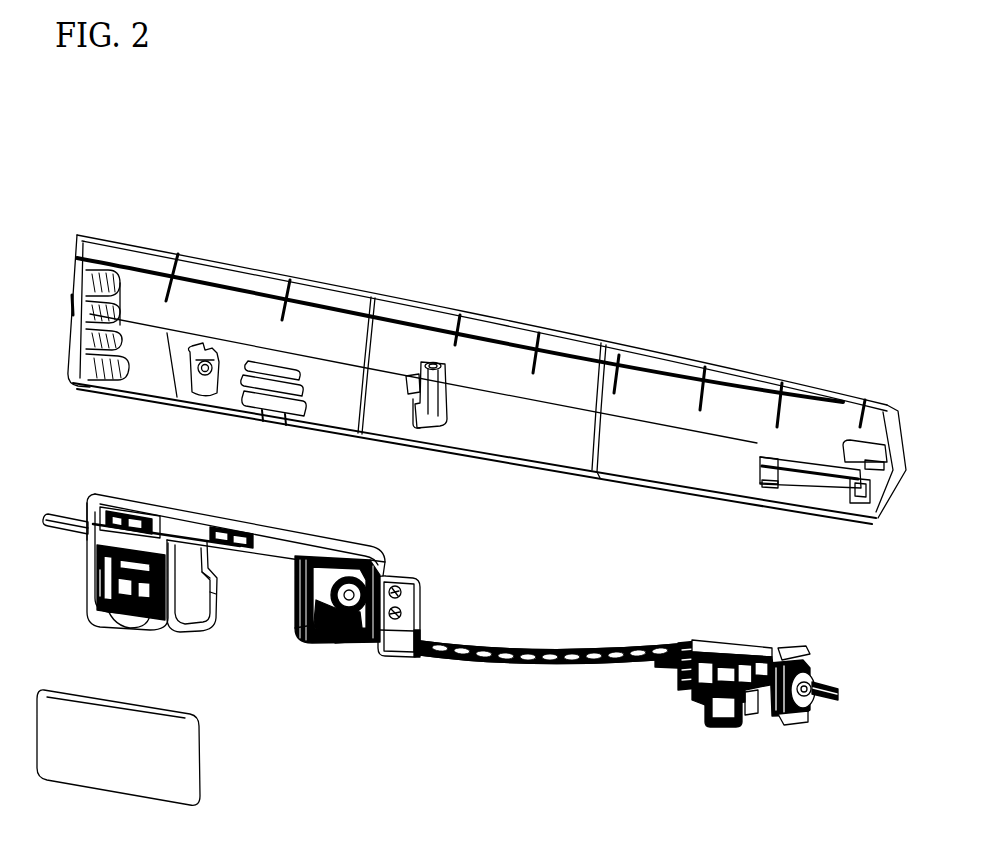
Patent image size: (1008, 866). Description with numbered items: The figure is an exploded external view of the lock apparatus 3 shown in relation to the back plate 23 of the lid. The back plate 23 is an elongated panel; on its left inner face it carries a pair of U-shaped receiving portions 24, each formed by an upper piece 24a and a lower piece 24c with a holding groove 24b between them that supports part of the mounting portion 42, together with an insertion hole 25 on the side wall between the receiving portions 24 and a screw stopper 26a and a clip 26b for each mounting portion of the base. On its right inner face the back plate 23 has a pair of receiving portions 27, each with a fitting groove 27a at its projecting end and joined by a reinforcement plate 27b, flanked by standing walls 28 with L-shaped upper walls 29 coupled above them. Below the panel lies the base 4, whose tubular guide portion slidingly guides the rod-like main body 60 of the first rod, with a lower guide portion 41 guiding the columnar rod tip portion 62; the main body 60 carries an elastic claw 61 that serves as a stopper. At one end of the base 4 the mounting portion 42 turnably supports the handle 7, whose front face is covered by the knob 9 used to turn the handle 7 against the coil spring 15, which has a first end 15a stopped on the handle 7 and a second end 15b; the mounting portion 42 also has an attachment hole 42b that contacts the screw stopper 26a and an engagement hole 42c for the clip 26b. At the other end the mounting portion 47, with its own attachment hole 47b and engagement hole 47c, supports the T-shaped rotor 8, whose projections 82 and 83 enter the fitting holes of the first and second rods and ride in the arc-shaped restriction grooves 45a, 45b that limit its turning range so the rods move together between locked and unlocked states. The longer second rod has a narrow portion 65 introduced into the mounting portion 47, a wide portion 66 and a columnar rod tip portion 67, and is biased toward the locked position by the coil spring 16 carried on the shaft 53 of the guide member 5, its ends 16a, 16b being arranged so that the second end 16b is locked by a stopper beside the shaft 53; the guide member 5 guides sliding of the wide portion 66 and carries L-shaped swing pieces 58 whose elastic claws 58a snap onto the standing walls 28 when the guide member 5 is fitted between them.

The lock apparatus 3 is at (498, 597).
The base 4 is at (353, 552).
The guide member 5 is at (749, 685).
The handle 7 is at (92, 585).
The rotor 8 is at (331, 600).
The knob 9 is at (100, 780).
The coil spring 15 is at (114, 610).
The first end 15a is at (165, 612).
The switch body front portion 15b is at (105, 593).
The coil spring 16 is at (728, 689).
The connector housing upper portion 16a is at (737, 685).
The second end 16b is at (755, 708).
The back plate 23 is at (550, 335).
The receiving portions 24 is at (149, 279).
The upper piece 24a is at (112, 282).
The holding groove 24b is at (120, 310).
The lower piece 24c is at (122, 329).
The insertion hole 25 is at (70, 305).
The screw stopper 26a is at (215, 378).
The clip 26b is at (205, 345).
The receiving portions 27 is at (765, 435).
The fitting groove 27a is at (760, 463).
The reinforcement plate 27b is at (780, 460).
The standing walls 28 is at (857, 450).
The upper walls 29 is at (880, 457).
The lower guide portion 41 is at (97, 540).
The mounting portion 42 is at (218, 602).
The attachment hole 42b is at (208, 596).
The engagement hole 42c is at (208, 577).
The restriction groove 45a is at (383, 558).
The restriction groove 45b is at (311, 640).
The mounting portion 47 is at (426, 604).
The attachment hole 47b is at (397, 587).
The engagement hole 47c is at (401, 614).
The shaft 53 is at (718, 715).
The swing pieces 58 is at (822, 685).
The elastic claw 58a is at (801, 648).
The main body 60 is at (227, 528).
The elastic claw 61 is at (100, 502).
The rod tip portion 62 is at (63, 515).
The narrow portion 65 is at (540, 664).
The wide portion 66 is at (676, 676).
The rod tip portion 67 is at (835, 697).
The projection 82 is at (318, 570).
The projection 83 is at (345, 643).